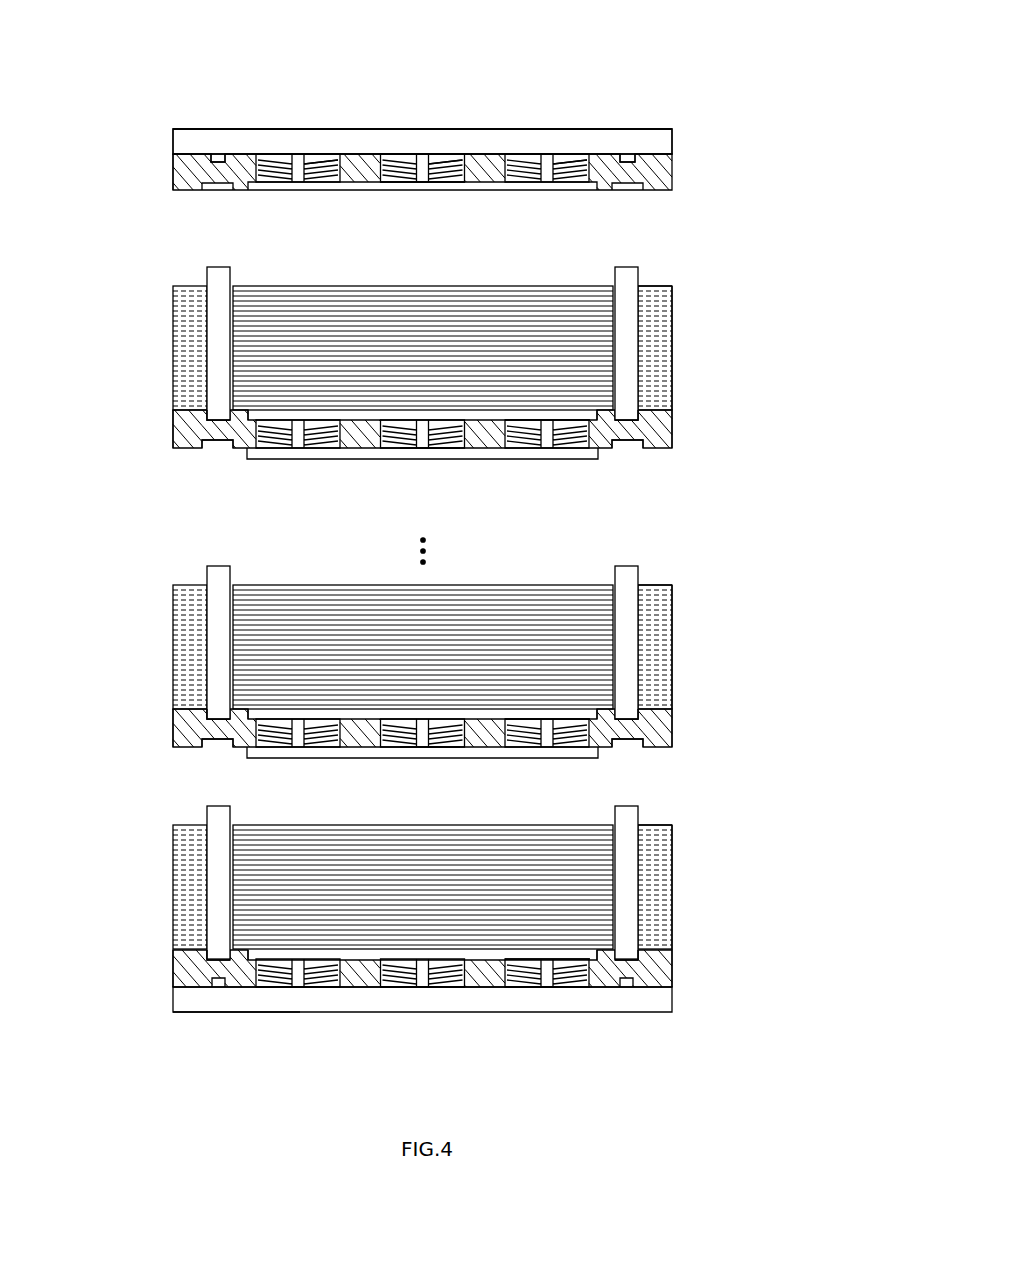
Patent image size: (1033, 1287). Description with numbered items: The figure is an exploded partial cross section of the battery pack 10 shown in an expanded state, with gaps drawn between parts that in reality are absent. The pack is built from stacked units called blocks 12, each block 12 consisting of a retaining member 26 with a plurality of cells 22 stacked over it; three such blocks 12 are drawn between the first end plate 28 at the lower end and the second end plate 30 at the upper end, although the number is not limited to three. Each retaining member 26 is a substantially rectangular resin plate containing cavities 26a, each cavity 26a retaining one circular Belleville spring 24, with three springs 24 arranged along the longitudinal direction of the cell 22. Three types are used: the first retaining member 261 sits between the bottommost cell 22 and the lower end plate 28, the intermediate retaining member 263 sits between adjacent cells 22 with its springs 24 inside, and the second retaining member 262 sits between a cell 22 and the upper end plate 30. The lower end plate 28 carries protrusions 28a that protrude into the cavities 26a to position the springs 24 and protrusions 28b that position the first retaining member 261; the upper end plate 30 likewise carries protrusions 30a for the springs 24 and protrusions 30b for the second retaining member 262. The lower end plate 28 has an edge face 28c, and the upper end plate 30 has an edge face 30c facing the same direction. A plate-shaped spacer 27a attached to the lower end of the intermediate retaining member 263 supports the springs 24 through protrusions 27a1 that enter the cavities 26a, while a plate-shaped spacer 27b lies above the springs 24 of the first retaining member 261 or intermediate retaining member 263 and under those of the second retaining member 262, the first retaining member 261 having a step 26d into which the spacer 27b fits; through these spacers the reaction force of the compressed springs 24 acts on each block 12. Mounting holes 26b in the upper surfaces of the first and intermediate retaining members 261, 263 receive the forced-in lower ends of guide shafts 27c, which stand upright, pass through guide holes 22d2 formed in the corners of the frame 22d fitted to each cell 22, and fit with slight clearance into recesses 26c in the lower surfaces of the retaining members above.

The battery pack 10 is at (670, 63).
The block 12 is at (698, 375).
The cell 22 is at (550, 275).
The frame 22d is at (676, 286).
The guide hole 22d2 is at (212, 340).
The spring 24 is at (282, 158).
The retaining member 26 is at (688, 180).
The cavity 26a is at (330, 174).
The mounting hole 26b is at (214, 406).
The recess 26c is at (215, 190).
The step 26d is at (257, 187).
The first retaining member 261 is at (172, 973).
The second retaining member 262 is at (172, 167).
The intermediate retaining member 263 is at (172, 425).
The spacer 27a is at (590, 460).
The protrusion 27a1 is at (428, 456).
The spacer 27b is at (403, 192).
The guide shaft 27c is at (198, 303).
The first end plate 28 is at (655, 1012).
The protrusion 28a is at (303, 990).
The protrusion 28b is at (218, 987).
The edge face 28c is at (236, 1020).
The second end plate 30 is at (672, 130).
The protrusion 30a is at (318, 158).
The protrusion 30b is at (213, 156).
The edge face 30c is at (484, 119).